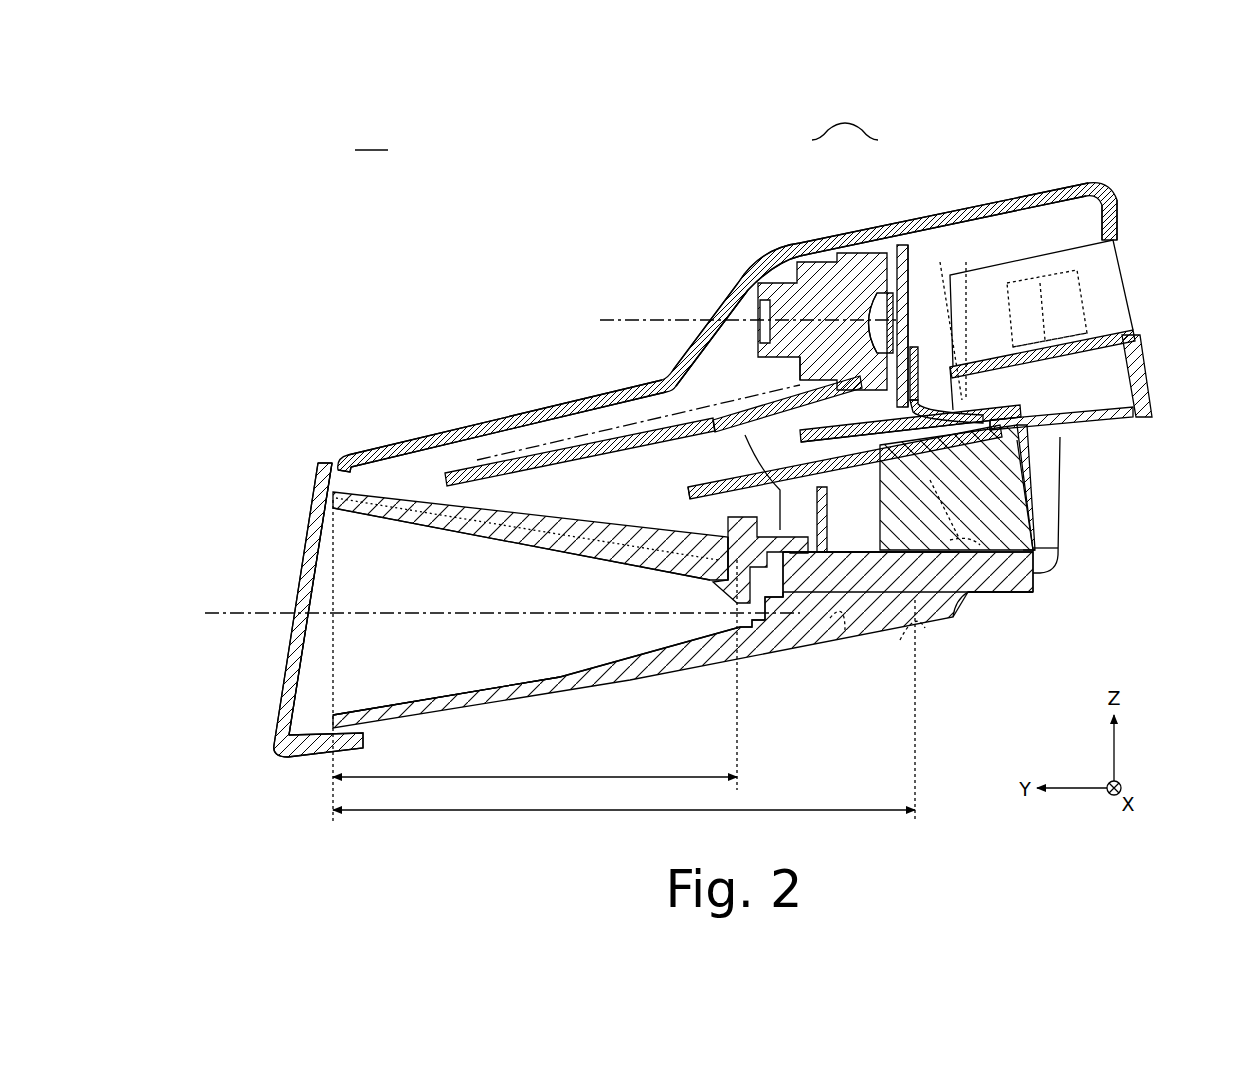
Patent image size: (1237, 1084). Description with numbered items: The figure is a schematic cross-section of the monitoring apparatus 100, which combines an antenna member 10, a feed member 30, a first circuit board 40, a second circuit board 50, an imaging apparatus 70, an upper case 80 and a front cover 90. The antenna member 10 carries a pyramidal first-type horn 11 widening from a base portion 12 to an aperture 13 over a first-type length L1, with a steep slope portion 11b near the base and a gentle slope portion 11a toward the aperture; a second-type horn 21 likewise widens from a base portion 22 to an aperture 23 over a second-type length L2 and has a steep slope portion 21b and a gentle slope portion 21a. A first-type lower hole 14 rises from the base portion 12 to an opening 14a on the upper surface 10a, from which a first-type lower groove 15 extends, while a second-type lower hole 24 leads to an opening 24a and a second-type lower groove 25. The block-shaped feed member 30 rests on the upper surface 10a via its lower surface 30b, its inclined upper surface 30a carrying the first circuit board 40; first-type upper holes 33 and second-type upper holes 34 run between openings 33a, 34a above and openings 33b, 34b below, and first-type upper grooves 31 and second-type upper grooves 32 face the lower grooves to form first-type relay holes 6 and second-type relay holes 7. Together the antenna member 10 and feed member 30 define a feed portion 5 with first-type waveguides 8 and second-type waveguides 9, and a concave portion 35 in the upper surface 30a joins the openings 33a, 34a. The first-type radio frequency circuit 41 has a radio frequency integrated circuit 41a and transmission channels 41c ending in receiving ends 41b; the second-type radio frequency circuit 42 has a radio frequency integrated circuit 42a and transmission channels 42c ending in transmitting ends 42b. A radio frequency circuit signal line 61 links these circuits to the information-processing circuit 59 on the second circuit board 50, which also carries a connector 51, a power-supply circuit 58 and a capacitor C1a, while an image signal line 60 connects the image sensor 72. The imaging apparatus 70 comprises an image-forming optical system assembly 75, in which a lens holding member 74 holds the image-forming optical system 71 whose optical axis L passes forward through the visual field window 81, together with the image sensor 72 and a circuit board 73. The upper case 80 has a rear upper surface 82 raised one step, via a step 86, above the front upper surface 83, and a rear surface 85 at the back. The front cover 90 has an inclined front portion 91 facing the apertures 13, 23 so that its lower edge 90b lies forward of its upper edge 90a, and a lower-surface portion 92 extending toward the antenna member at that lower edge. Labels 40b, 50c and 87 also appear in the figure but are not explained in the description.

The monitoring apparatus 100 is at (393, 242).
The antenna member 10 is at (420, 495).
The upper surface 10a is at (1040, 553).
The first-type horn 11 is at (320, 466).
The gentle slope portion 11a is at (612, 688).
The steep slope portion 11b is at (716, 655).
The base portion 12 is at (745, 660).
The aperture 13 is at (366, 515).
The first-type lower hole 14 is at (764, 632).
The opening 14a is at (738, 540).
The first-type lower groove 15 is at (838, 556).
The second-type horn 21 is at (435, 527).
The gentle slope portion 21a is at (840, 628).
The steep slope portion 21b is at (912, 632).
The base portion 22 is at (965, 620).
The aperture 23 is at (318, 470).
The second-type lower hole 24 is at (992, 597).
The opening 24a is at (955, 540).
The second-type lower groove 25 is at (1040, 586).
The feed member 30 is at (1060, 460).
The upper surface 30a is at (1030, 470).
The lower surface 30b is at (1058, 572).
The first-type upper groove 31 is at (738, 518).
The second-type upper groove 32 is at (1036, 522).
The first-type upper hole 33 is at (828, 520).
The opening 33a is at (782, 507).
The opening 33b is at (757, 520).
The second-type upper hole 34 is at (1002, 506).
The opening 34a is at (955, 372).
The opening 34b is at (955, 522).
The concave portion 35 is at (943, 438).
The first circuit board 40 is at (1030, 422).
The rear plate end 40b is at (1000, 420).
The first-type radio frequency circuit 41 is at (794, 404).
The radio frequency integrated circuit 41a is at (840, 458).
The receiving ends 41b is at (811, 503).
The transmission channels 41c is at (762, 410).
The second-type radio frequency circuit 42 is at (943, 319).
The radio frequency integrated circuit 42a is at (915, 398).
The transmitting ends 42b is at (970, 398).
The transmission channels 42c is at (970, 316).
The feed portion 5 is at (1062, 510).
The first-type relay hole 6 is at (858, 562).
The second-type relay hole 7 is at (925, 563).
The first-type waveguide 8 is at (795, 514).
The second-type waveguide 9 is at (1048, 496).
The second circuit board 50 is at (1106, 330).
The substrate front end 50c is at (827, 375).
The connector 51 is at (1108, 272).
The power-supply circuit 58 is at (1092, 300).
The information-processing circuit 59 is at (478, 425).
The image signal line 60 is at (1146, 378).
The radio frequency circuit signal line 61 is at (633, 450).
The imaging apparatus 70 is at (790, 258).
The image-forming optical system 71 is at (820, 260).
The image sensor 72 is at (893, 300).
The circuit board 73 is at (945, 215).
The lens holding member 74 is at (860, 258).
The image-forming optical system assembly 75 is at (845, 118).
The upper case 80 is at (1056, 178).
The visual field window 81 is at (732, 278).
The rear upper surface 82 is at (1004, 200).
The front upper surface 83 is at (700, 332).
The rear surface 85 is at (1115, 212).
The step 86 is at (700, 330).
The joint portion 87 is at (338, 466).
The front cover 90 is at (272, 680).
The upper edge 90a is at (322, 460).
The lower edge 90b is at (278, 752).
The front portion 91 is at (300, 581).
The lower-surface portion 92 is at (307, 752).
The capacitor C1a is at (1040, 283).
The optical axis L is at (612, 318).
The first-type length L1 is at (535, 661).
The second-type length L2 is at (624, 711).